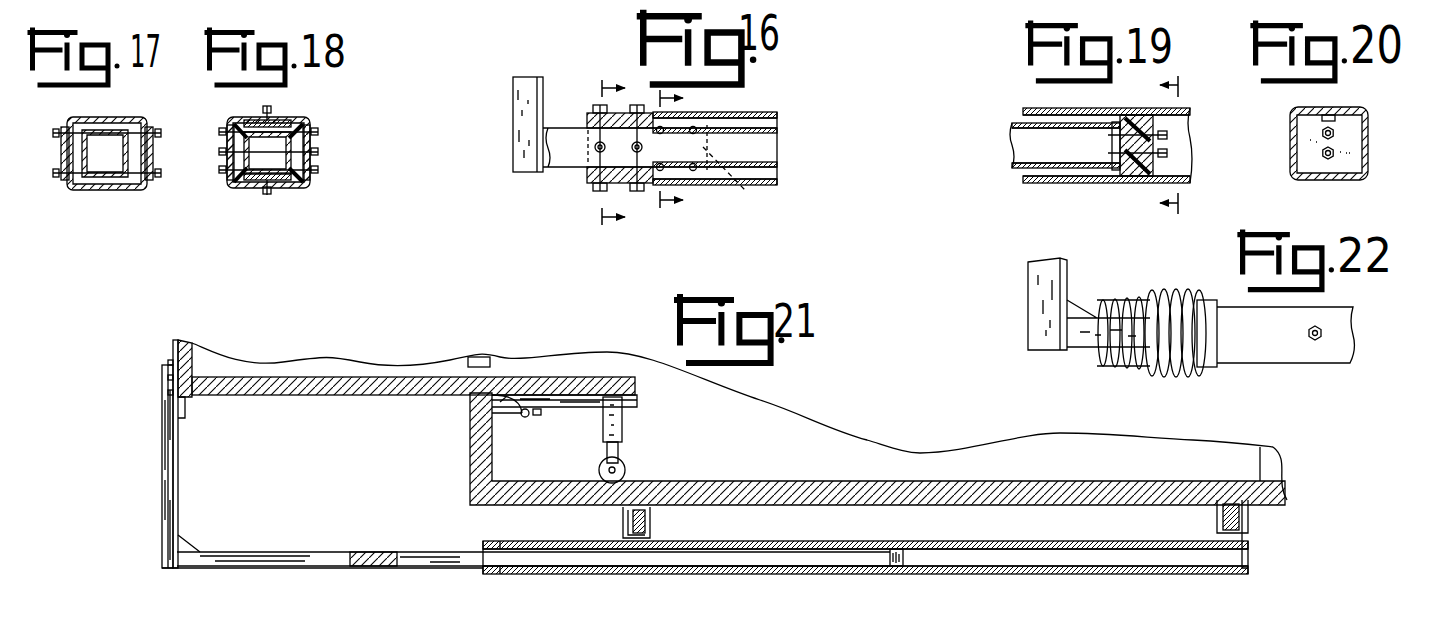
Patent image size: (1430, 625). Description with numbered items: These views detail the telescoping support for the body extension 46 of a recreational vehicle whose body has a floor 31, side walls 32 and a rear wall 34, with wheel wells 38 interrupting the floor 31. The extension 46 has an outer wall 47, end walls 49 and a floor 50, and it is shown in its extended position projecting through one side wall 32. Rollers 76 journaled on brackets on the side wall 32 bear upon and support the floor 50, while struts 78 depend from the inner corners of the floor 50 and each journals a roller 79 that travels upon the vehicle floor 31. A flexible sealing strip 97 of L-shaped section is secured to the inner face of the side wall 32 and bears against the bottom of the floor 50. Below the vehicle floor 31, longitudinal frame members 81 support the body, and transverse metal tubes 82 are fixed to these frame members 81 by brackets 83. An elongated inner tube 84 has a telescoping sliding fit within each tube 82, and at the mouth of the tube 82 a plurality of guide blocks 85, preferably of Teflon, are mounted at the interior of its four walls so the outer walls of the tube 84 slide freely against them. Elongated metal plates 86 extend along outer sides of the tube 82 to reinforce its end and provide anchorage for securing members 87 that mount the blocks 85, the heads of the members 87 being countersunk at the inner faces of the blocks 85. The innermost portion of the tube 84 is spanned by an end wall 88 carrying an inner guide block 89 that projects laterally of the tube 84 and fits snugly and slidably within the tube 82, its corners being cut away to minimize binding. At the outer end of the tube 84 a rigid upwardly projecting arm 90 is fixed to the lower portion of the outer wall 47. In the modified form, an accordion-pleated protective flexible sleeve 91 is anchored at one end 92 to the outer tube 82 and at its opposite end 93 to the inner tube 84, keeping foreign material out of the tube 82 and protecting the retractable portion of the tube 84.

In FIG. 21, the floor 31 is at (762, 495).
In FIG. 21, the side wall 32 is at (480, 465).
In FIG. 21, the rear wall 34 is at (828, 440).
In FIG. 21, the wheel well 38 is at (485, 490).
In FIG. 21, the body extension 46 is at (284, 350).
In FIG. 21, the outer wall 47 is at (185, 343).
In FIG. 21, the end wall 49 is at (335, 362).
In FIG. 21, the floor 50 is at (318, 396).
In FIG. 21, the roller 76 is at (534, 418).
In FIG. 21, the strut 78 is at (624, 420).
In FIG. 21, the roller 79 is at (626, 470).
In FIG. 21, the longitudinal frame member 81 is at (652, 520).
In FIG. 17, the transverse tube 82 is at (115, 190).
In FIG. 18, the transverse tube 82 is at (233, 188).
In FIG. 16, the transverse tube 82 is at (763, 113).
In FIG. 19, the transverse tube 82 is at (1063, 183).
In FIG. 20, the transverse tube 82 is at (1368, 127).
In FIG. 22, the transverse tube 82 is at (1325, 365).
In FIG. 21, the transverse tube 82 is at (1040, 574).
In FIG. 21, the bracket 83 is at (623, 522).
In FIG. 17, the inner tube 84 is at (97, 176).
In FIG. 18, the inner tube 84 is at (280, 120).
In FIG. 16, the inner tube 84 is at (777, 143).
In FIG. 19, the inner tube 84 is at (1012, 143).
In FIG. 22, the inner tube 84 is at (1108, 330).
In FIG. 21, the inner tube 84 is at (420, 566).
In FIG. 18, the guide block 85 is at (283, 180).
In FIG. 16, the guide block 85 is at (600, 122).
In FIG. 21, the guide block 85 is at (486, 547).
In FIG. 17, the metal plate 86 is at (61, 150).
In FIG. 18, the metal plate 86 is at (227, 146).
In FIG. 16, the metal plate 86 is at (733, 184).
In FIG. 18, the securing member 87 is at (312, 152).
In FIG. 16, the securing member 87 is at (637, 191).
In FIG. 19, the end wall 88 is at (1113, 142).
In FIG. 20, the inner guide block 89 is at (1307, 127).
In FIG. 21, the inner guide block 89 is at (897, 566).
In FIG. 16, the arm 90 is at (527, 102).
In FIG. 21, the arm 90 is at (162, 447).
In FIG. 22, the protective flexible sleeve 91 is at (1182, 292).
In FIG. 22, the end 92 is at (1210, 330).
In FIG. 22, the end 93 is at (1103, 358).
In FIG. 21, the flexible sealing strip 97 is at (470, 417).